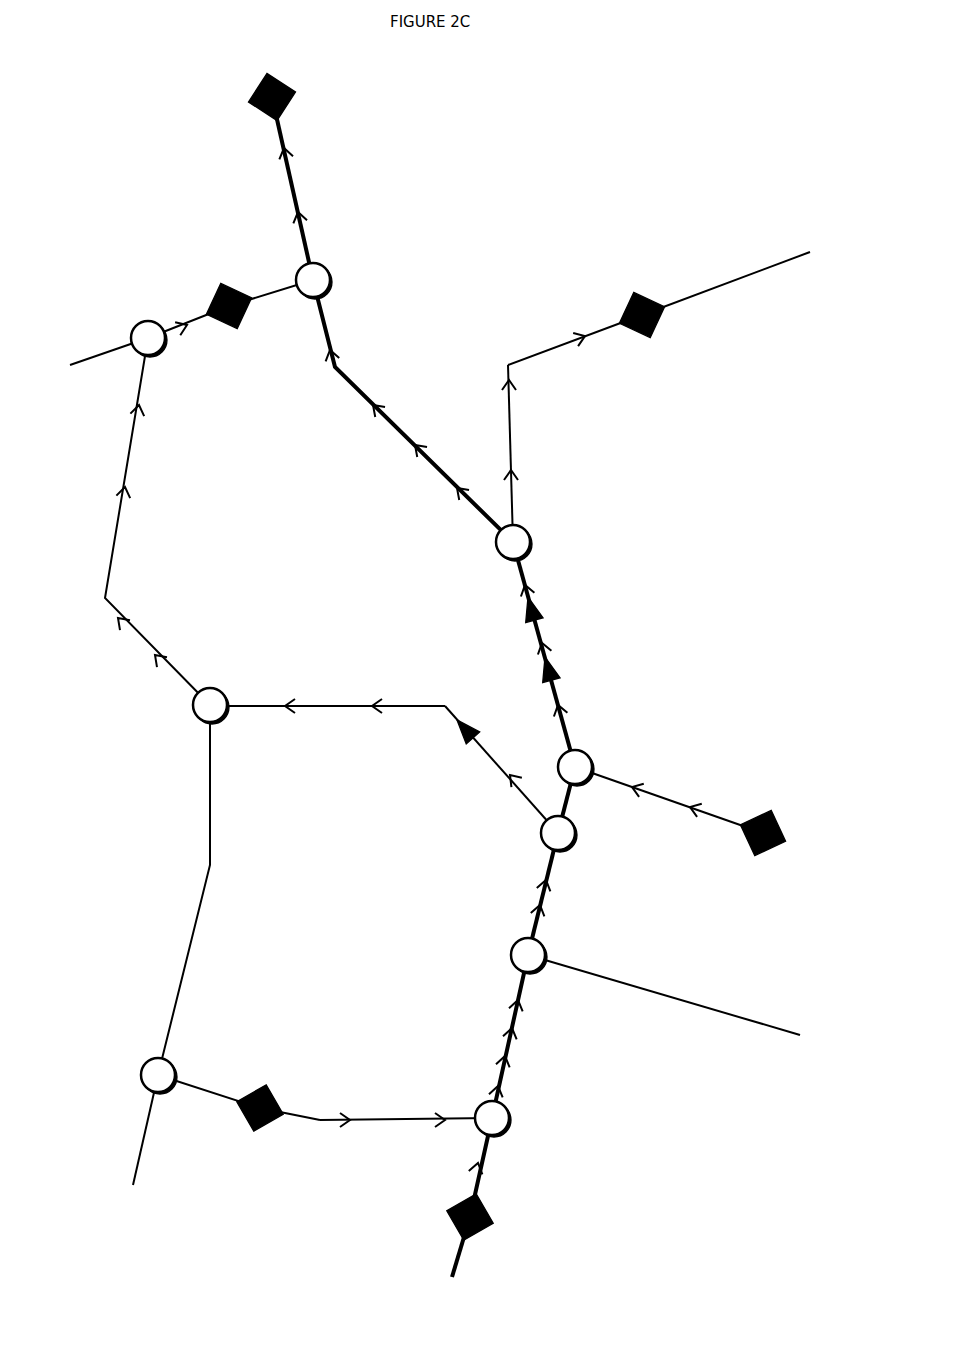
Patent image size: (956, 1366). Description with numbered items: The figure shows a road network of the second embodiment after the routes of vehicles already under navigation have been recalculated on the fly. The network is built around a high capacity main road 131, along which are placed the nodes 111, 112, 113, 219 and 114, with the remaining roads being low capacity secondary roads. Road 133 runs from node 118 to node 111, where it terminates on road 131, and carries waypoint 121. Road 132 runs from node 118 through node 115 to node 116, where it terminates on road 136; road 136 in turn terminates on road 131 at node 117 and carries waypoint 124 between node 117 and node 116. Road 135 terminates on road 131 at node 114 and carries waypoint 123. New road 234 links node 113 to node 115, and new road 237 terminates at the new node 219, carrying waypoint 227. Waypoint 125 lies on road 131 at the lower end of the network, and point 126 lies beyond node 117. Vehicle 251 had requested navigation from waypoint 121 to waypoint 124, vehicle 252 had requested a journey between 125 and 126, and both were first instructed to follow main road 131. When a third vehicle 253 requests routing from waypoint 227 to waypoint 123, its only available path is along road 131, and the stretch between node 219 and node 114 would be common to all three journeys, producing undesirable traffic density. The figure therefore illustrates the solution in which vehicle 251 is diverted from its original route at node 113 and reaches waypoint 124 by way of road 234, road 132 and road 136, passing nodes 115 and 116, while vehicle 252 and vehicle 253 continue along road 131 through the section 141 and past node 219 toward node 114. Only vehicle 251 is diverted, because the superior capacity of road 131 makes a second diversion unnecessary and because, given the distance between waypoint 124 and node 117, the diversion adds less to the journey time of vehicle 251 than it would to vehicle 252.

The node 111 is at (508, 1125).
The node 112 is at (545, 965).
The node 113 is at (575, 840).
The node 114 is at (530, 541).
The node 115 is at (225, 715).
The node 116 is at (165, 345).
The node 117 is at (330, 288).
The node 118 is at (142, 1068).
The waypoint 121 is at (275, 1128).
The waypoint 123 is at (658, 325).
The waypoint 124 is at (220, 296).
The waypoint 125 is at (488, 1225).
The waypoint 126 is at (262, 85).
The road 131 is at (460, 1255).
The road 132 is at (140, 1163).
The road 133 is at (385, 1118).
The road 135 is at (555, 340).
The road 136 is at (100, 345).
The link 141 is at (545, 898).
The node 219 is at (590, 780).
The waypoint 227 is at (775, 845).
The road 234 is at (400, 705).
The road 237 is at (660, 783).
The vehicle 251 is at (460, 740).
The vehicle 252 is at (540, 602).
The vehicle 253 is at (555, 665).